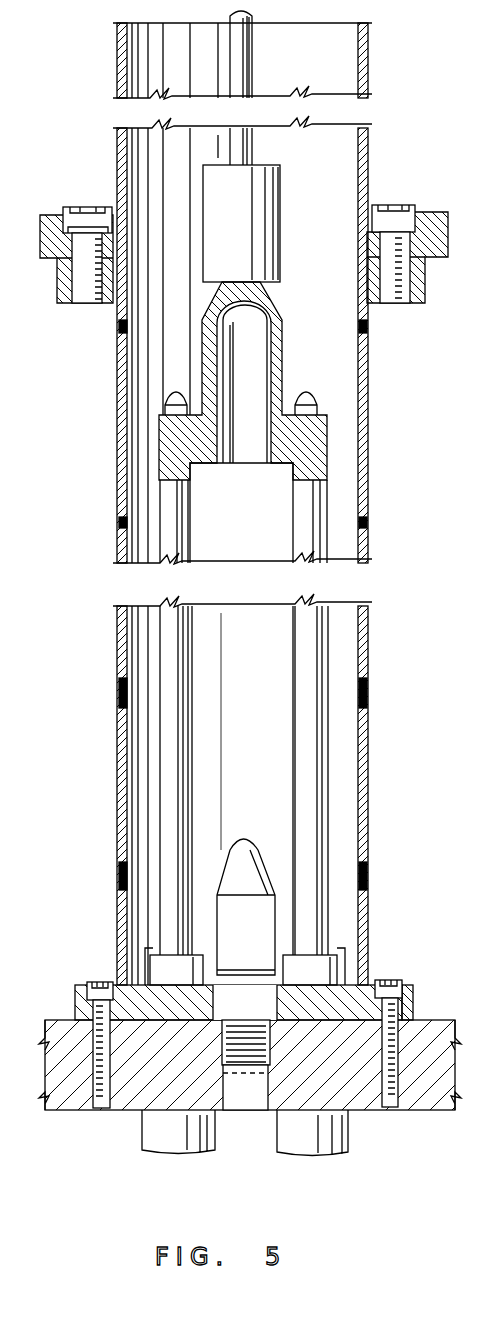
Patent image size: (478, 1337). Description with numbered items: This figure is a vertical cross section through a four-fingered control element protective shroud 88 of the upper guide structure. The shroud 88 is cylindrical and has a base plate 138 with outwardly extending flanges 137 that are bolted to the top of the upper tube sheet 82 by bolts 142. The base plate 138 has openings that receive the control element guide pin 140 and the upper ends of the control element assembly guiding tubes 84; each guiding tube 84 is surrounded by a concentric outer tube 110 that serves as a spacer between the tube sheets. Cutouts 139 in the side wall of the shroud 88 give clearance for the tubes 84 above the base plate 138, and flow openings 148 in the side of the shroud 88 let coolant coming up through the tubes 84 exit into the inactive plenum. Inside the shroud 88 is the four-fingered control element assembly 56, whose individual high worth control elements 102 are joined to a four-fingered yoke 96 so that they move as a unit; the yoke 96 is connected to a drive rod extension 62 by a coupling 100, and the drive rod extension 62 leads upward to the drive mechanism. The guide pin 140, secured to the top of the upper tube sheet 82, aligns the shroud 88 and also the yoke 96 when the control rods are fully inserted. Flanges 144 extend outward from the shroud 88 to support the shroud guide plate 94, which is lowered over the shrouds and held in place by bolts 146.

The 4-fingered control element assembly 56 is at (295, 382).
The drive rod extension 62 is at (252, 77).
The upper tube sheet 82 is at (408, 1102).
The control element assembly guiding tube 84 is at (328, 970).
The 4-fingered control element assembly protective shroud 88 is at (367, 653).
The shroud guide plate 94 is at (448, 233).
The 4-fingered yoke 96 is at (327, 437).
The coupling 100 is at (272, 263).
The control element 102 is at (192, 525).
The concentric outer tube 110 is at (148, 1130).
The outwardly extending flange 137 is at (112, 212).
The base plate 138 is at (408, 1007).
The cutout 139 is at (153, 948).
The control element guide pin 140 is at (256, 838).
The bolt 142 is at (110, 983).
The flange 144 is at (65, 305).
The bolt 146 is at (92, 297).
The flow opening 148 is at (118, 525).